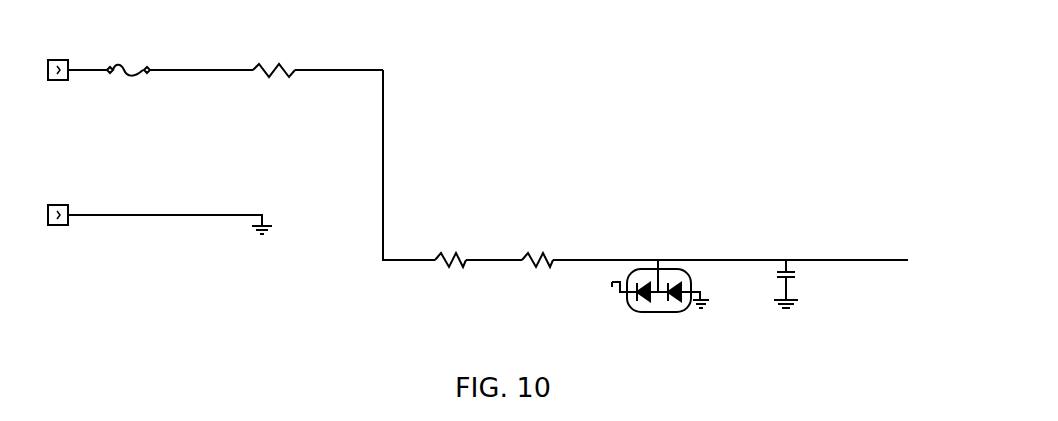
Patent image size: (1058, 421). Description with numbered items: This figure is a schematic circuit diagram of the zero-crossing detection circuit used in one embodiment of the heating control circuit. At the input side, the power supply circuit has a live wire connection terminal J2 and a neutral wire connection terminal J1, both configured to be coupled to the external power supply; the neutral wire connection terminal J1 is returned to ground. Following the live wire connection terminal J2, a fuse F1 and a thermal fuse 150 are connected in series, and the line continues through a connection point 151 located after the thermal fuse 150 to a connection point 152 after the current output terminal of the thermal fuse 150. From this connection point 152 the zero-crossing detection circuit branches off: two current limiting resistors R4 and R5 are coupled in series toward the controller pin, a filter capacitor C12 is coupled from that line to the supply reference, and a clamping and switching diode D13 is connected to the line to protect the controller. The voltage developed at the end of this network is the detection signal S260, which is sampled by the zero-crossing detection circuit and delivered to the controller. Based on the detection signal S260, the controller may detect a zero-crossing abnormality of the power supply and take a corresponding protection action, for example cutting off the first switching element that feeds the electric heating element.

The live wire connection terminal J2 is at (74, 74).
The fuse F1 is at (137, 62).
The thermal fuse 150 is at (272, 59).
The connection point 151 is at (325, 61).
The connection point 152 is at (380, 62).
The current limiting resistor R4 is at (452, 251).
The current limiting resistor R5 is at (536, 251).
The detection signal S260 is at (754, 260).
The clamping and switching diode D13 is at (628, 314).
The filter capacitor C12 is at (795, 277).
The neutral wire connection terminal J1 is at (159, 222).